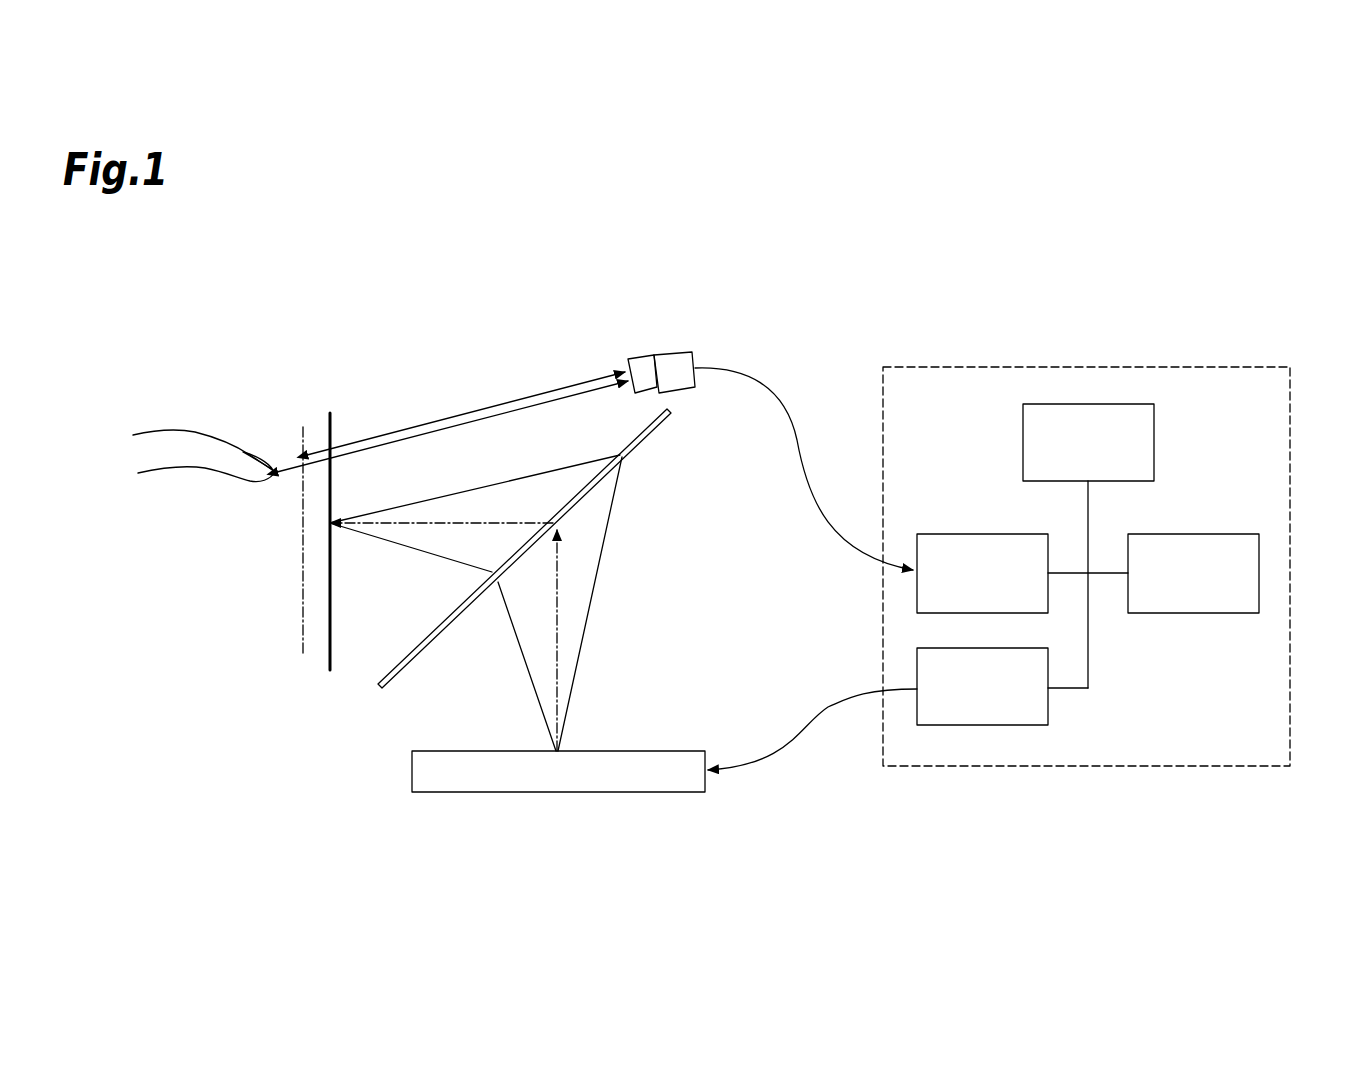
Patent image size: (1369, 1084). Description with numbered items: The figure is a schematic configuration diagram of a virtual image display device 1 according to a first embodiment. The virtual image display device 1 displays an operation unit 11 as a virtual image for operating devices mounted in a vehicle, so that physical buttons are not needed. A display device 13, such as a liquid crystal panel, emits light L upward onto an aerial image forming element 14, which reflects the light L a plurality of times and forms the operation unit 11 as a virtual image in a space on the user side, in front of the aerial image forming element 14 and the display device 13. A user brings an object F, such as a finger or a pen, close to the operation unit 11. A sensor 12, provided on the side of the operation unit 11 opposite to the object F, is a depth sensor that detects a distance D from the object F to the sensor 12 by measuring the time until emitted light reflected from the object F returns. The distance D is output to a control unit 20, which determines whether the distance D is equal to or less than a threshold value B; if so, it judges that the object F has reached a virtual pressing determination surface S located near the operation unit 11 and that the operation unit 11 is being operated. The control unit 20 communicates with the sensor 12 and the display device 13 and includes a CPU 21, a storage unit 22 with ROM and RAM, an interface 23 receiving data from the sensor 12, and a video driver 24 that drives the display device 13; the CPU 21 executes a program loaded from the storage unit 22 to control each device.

The virtual image display device 1 is at (1012, 300).
The operation unit 11 is at (330, 413).
The pressing determination surface S is at (303, 622).
The object F is at (247, 479).
The threshold value B is at (466, 413).
The distance D is at (452, 426).
The sensor 12 is at (675, 370).
The display device 13 is at (555, 770).
The aerial image forming element 14 is at (668, 425).
The light L is at (560, 617).
The control unit 20 is at (1210, 365).
The CPU 21 is at (1088, 415).
The storage unit 22 is at (1240, 568).
The interface 23 is at (950, 540).
The video driver 24 is at (978, 712).